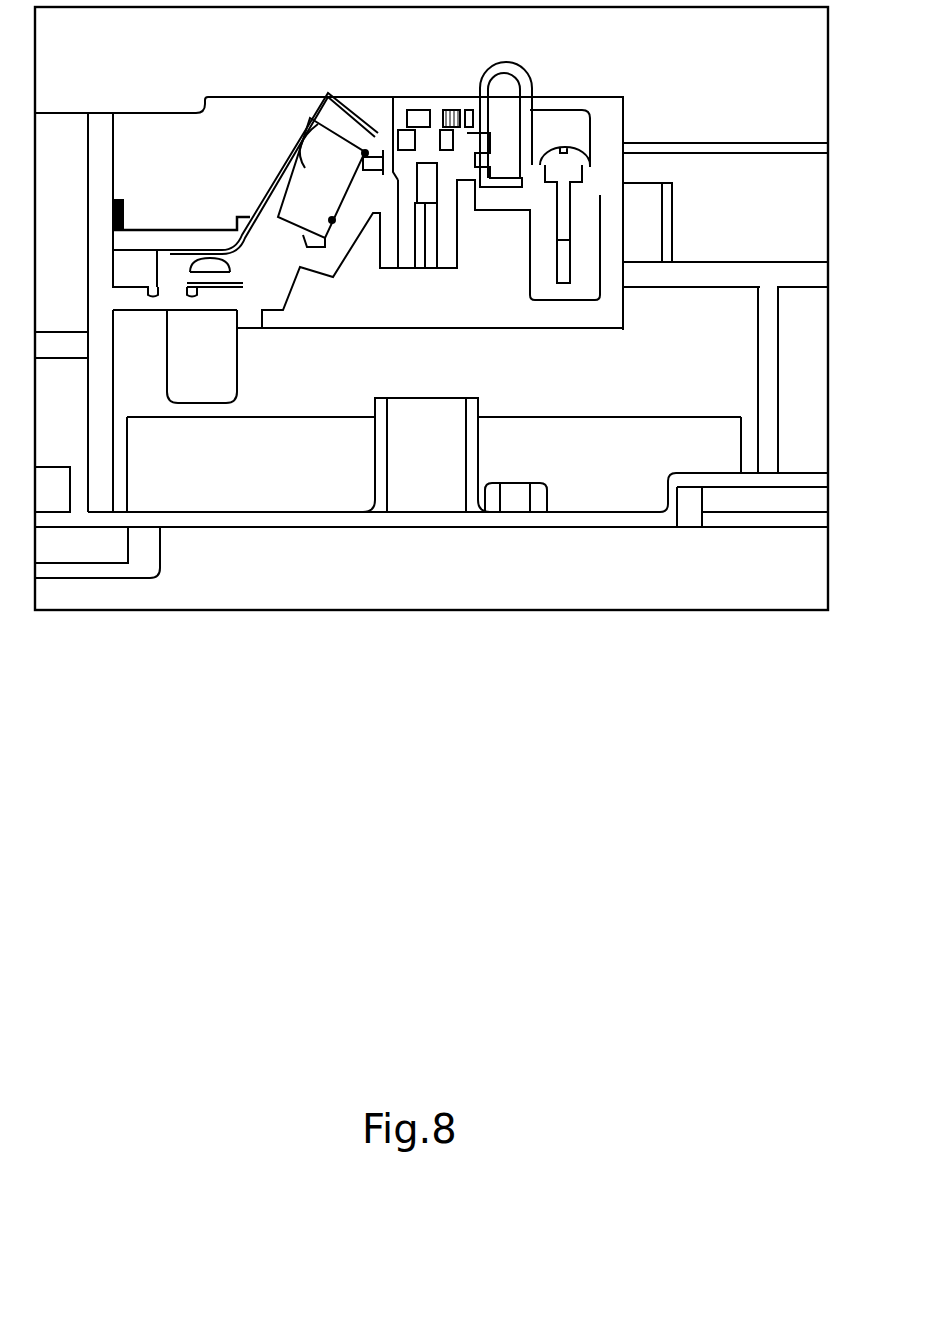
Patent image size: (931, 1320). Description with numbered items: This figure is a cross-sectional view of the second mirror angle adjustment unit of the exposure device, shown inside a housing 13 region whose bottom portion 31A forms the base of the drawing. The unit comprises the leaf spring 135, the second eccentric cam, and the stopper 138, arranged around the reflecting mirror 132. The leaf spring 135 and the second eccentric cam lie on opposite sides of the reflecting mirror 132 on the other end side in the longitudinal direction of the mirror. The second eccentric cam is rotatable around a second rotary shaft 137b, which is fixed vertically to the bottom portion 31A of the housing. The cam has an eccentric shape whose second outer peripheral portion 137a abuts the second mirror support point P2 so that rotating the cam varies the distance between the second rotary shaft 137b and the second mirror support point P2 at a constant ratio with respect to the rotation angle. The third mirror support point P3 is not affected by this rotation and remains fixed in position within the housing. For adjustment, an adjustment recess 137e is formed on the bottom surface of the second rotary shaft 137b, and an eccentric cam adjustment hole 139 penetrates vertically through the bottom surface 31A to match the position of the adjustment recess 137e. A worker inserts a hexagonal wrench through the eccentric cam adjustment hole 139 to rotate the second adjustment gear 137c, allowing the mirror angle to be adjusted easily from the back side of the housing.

The housing base 13 is at (288, 532).
The bottom portion of the housing 31A is at (560, 514).
The reflecting mirror 132 is at (325, 118).
The leaf spring 135 is at (262, 197).
The second outer peripheral portion 137a is at (366, 157).
The second rotary shaft 137b is at (422, 120).
The second adjustment gear 137c is at (370, 153).
The adjustment recess 137e is at (433, 227).
The stopper 138 is at (528, 92).
The eccentric cam adjustment hole 139 is at (436, 498).
The second mirror support point P2 is at (365, 153).
The third mirror support point P3 is at (332, 220).